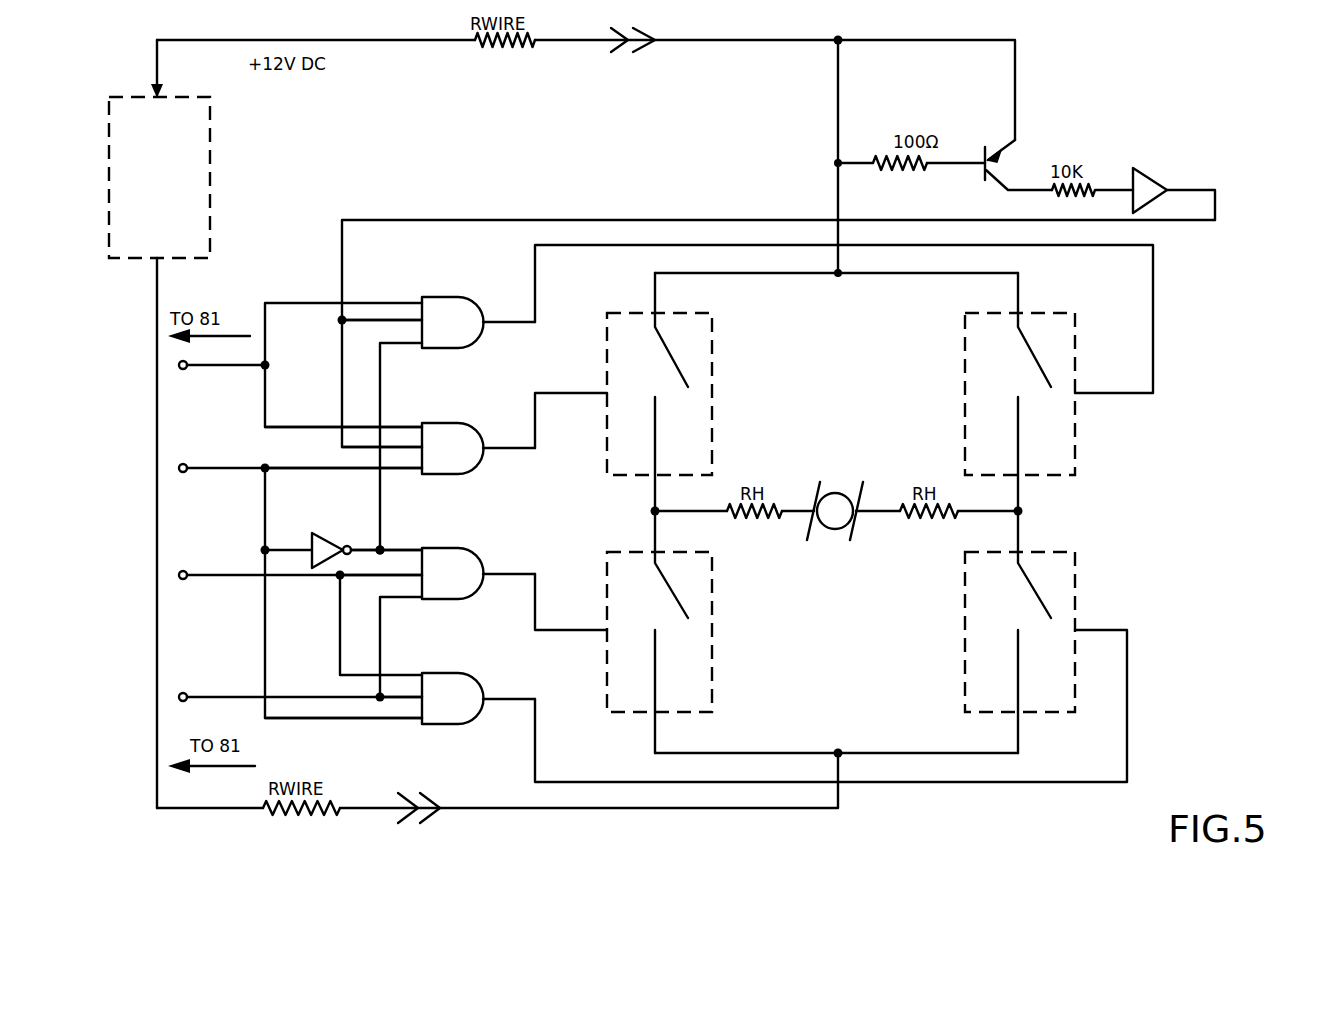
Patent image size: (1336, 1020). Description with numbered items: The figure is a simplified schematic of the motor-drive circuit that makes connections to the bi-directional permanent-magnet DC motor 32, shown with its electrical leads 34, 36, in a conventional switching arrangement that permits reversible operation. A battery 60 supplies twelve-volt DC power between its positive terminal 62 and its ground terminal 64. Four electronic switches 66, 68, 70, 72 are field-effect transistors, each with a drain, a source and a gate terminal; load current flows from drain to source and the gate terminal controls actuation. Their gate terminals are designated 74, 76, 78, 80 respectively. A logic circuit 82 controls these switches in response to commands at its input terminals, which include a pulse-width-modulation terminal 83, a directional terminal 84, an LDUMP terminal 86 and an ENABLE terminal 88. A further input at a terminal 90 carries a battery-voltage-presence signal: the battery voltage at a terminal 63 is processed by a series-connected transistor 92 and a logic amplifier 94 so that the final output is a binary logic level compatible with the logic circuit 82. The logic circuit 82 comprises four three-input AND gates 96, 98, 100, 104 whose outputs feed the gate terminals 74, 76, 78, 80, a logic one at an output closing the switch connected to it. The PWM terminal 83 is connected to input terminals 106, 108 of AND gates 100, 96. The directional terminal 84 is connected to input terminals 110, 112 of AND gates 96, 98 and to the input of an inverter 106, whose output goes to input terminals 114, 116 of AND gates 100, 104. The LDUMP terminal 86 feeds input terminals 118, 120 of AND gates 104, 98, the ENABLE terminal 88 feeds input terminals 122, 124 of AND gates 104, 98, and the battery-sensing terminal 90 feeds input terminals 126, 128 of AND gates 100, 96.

The permanent-magnet DC motor 32 is at (835, 493).
The electrical lead 34 is at (800, 506).
The electrical lead 36 is at (878, 508).
The battery 60 is at (210, 167).
The positive terminal 62 is at (163, 88).
The terminal 63 is at (836, 48).
The ground terminal 64 is at (160, 260).
The electronic switch 66 is at (672, 357).
The electronic switch 68 is at (1030, 588).
The electronic switch 70 is at (1030, 343).
The electronic switch 72 is at (672, 598).
The gate terminal 74 is at (600, 397).
The gate terminal 76 is at (1078, 632).
The gate terminal 78 is at (1078, 395).
The gate terminal 80 is at (600, 634).
The logic circuit 82 is at (412, 287).
The pulse-width-modulation terminal 83 is at (182, 372).
The directional terminal 84 is at (182, 475).
The LDUMP terminal 86 is at (182, 582).
The ENABLE terminal 88 is at (182, 704).
The battery-sensing terminal 90 is at (342, 218).
The transistor 92 is at (995, 178).
The logic amplifier 94 is at (1148, 174).
The AND gate 96 is at (452, 423).
The AND gate 98 is at (465, 673).
The AND gate 100 is at (448, 297).
The AND gate 104 is at (462, 548).
The inverter 106 is at (395, 300).
The input terminal 108 is at (332, 425).
The input terminal 110 is at (350, 472).
The input terminal 112 is at (400, 722).
The input terminal 114 is at (398, 348).
The input terminal 116 is at (415, 548).
The input terminal 118 is at (398, 578).
The input terminal 120 is at (396, 673).
The input terminal 122 is at (398, 602).
The input terminal 124 is at (400, 699).
The input terminal 126 is at (348, 325).
The input terminal 128 is at (345, 449).